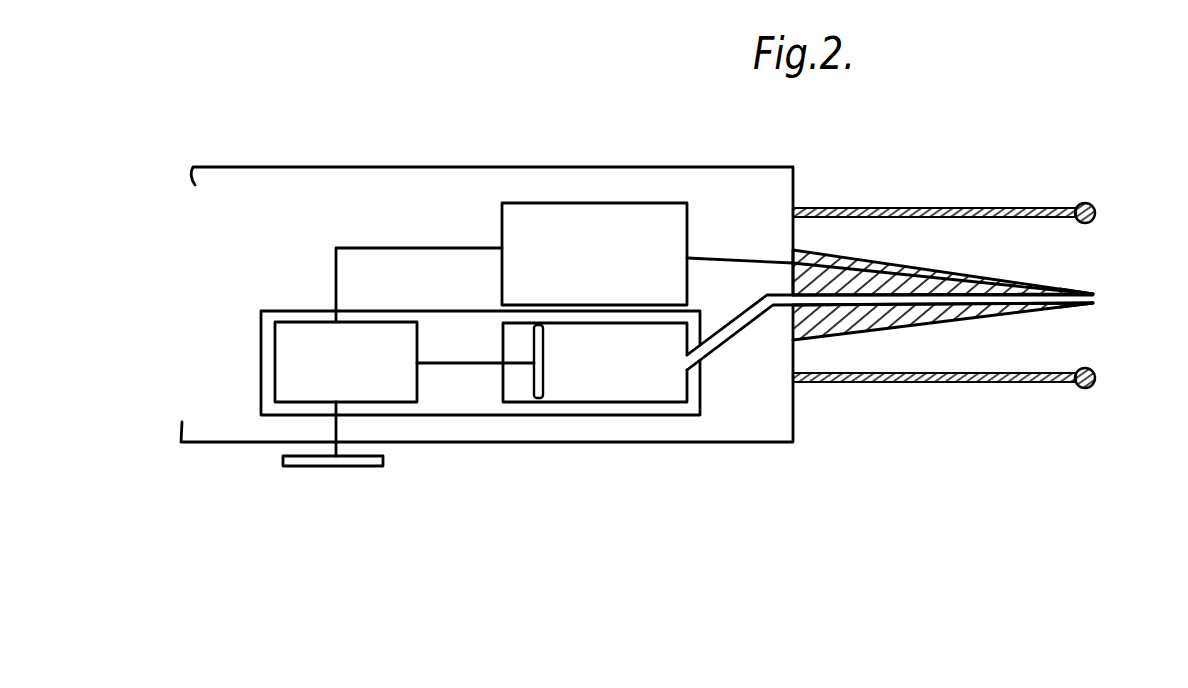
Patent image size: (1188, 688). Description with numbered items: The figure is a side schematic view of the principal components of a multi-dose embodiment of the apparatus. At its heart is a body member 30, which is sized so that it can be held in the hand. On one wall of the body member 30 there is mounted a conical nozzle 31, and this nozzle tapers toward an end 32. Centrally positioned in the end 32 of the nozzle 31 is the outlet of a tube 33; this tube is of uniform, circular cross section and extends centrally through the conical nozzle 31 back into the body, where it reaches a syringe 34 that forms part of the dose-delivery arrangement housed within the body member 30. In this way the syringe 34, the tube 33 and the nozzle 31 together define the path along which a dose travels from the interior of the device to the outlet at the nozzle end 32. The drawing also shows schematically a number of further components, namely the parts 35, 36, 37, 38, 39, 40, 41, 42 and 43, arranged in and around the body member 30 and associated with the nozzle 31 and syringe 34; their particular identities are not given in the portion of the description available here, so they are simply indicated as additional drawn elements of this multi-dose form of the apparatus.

The body member 30 is at (720, 432).
The conical nozzle 31 is at (890, 318).
The end of nozzle 32 is at (1075, 304).
The tube 33 is at (730, 337).
The syringe 34 is at (612, 395).
The electrode terminal 35 is at (1085, 203).
The electrode rod 36 is at (872, 208).
The control unit 37 is at (566, 203).
The conductor 38 is at (722, 258).
The upper nozzle tip 39 is at (1092, 293).
The reservoir unit 40 is at (263, 392).
The power supply 41 is at (400, 395).
The piston 42 is at (538, 398).
The base plate 43 is at (351, 466).